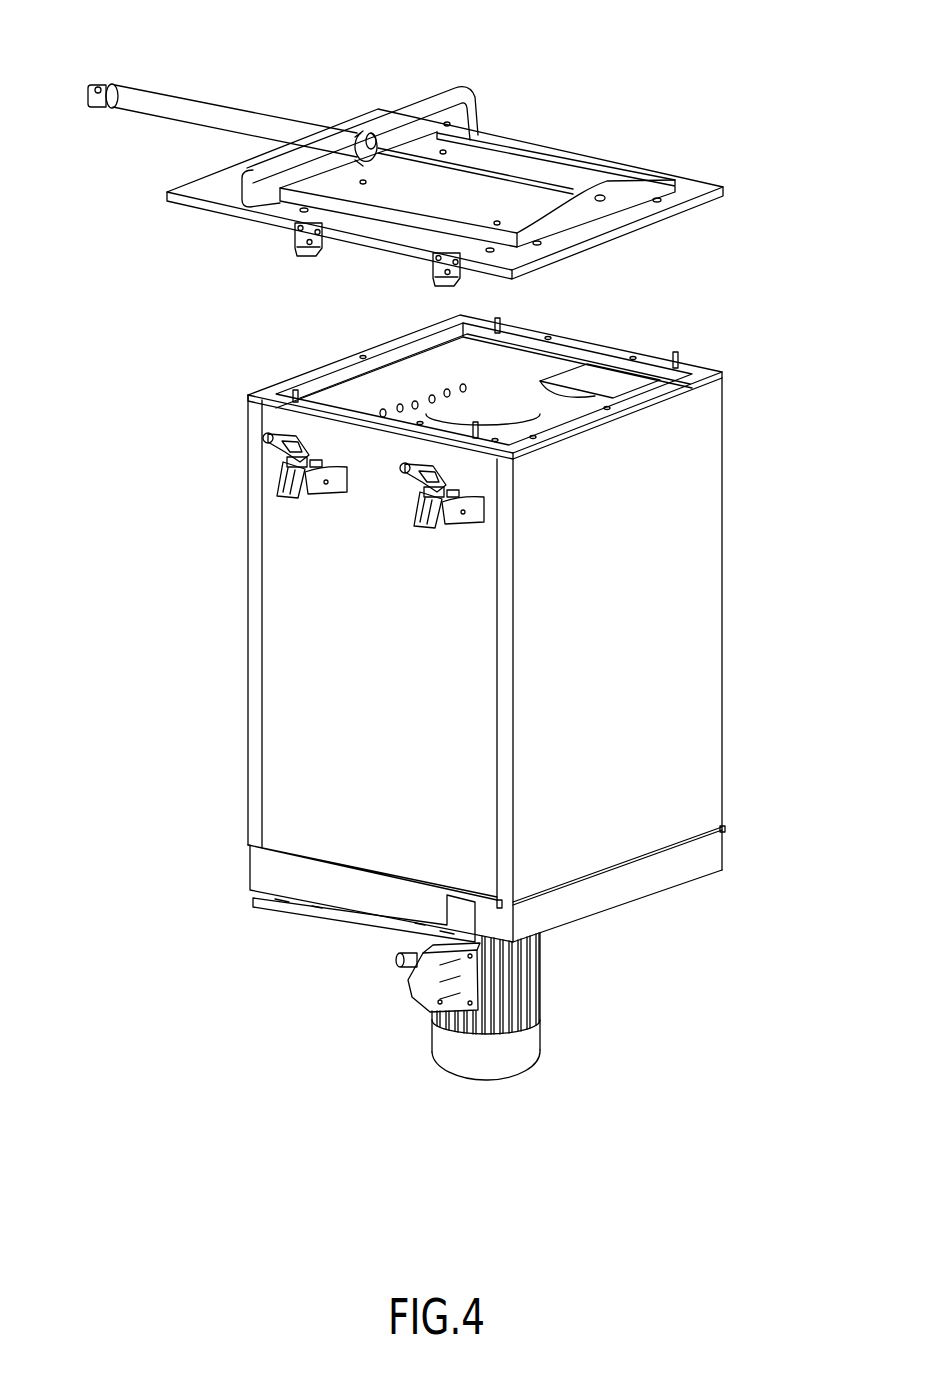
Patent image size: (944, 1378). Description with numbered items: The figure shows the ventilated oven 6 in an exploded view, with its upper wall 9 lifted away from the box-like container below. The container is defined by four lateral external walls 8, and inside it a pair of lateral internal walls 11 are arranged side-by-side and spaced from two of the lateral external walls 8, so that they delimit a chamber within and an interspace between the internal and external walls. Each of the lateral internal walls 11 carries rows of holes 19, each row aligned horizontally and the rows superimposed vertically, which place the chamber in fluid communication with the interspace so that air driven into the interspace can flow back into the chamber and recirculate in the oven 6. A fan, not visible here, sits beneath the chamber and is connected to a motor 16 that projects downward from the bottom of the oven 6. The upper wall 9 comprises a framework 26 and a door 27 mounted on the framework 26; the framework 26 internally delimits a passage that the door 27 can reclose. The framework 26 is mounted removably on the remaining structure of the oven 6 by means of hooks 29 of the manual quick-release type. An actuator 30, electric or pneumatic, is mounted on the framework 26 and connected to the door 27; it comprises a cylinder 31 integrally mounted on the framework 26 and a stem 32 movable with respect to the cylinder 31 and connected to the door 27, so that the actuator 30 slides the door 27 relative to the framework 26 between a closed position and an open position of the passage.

The oven 6 is at (729, 477).
The lateral external walls 8 is at (700, 623).
The upper wall 9 is at (708, 187).
The lateral internal walls 11 is at (395, 383).
The motor 16 is at (543, 977).
The holes 19 is at (467, 387).
The framework 26 is at (717, 199).
The door 27 is at (543, 172).
The hooks 29 is at (420, 502).
The actuator 30 is at (213, 100).
The cylinder 31 is at (148, 105).
The stem 32 is at (470, 170).